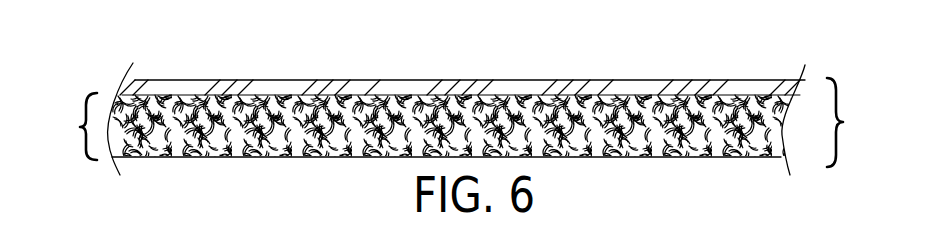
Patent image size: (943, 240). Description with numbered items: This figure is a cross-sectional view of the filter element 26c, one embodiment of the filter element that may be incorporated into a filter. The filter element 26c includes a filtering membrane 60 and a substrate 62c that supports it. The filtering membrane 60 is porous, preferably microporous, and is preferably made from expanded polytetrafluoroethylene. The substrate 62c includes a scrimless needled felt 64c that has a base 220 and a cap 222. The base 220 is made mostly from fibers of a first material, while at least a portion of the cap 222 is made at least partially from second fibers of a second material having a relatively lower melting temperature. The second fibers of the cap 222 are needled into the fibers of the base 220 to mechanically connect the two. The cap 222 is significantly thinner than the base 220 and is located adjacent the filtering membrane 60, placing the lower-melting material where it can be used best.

The filtering membrane 60 is at (383, 87).
The cap 222 is at (213, 110).
The base 220 is at (214, 140).
The scrimless needled felt 64c is at (606, 157).
The substrate 62c is at (83, 128).
The filter element 26c is at (842, 122).